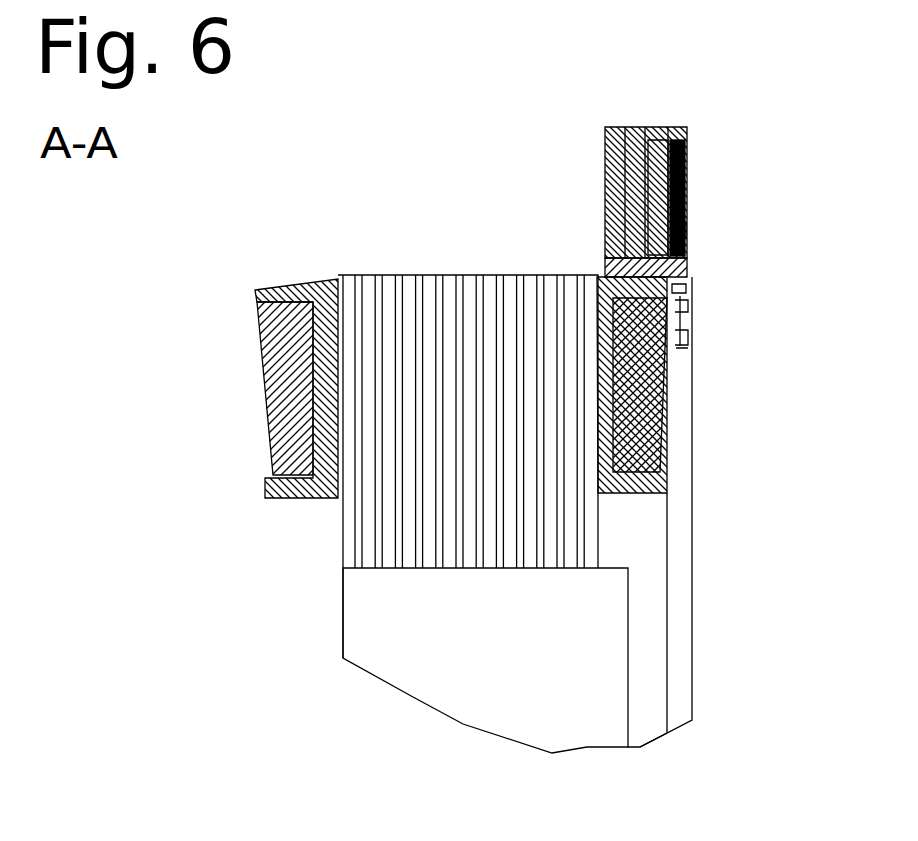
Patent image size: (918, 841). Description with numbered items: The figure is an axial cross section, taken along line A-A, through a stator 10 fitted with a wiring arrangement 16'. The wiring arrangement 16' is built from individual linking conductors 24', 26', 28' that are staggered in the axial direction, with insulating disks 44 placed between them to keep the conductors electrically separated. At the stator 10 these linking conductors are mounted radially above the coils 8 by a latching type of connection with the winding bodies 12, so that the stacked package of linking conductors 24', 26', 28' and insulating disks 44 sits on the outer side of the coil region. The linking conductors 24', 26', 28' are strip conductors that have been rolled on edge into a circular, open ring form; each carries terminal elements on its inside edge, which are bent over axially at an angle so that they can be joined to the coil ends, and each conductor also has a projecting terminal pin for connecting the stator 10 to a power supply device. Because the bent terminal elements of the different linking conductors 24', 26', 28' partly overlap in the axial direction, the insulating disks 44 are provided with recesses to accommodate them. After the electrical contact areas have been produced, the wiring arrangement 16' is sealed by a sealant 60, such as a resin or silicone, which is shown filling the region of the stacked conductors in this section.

The coils 8 is at (203, 370).
The stator 10 is at (414, 176).
The winding bodies 12 is at (310, 278).
The wiring arrangement 16' is at (680, 185).
The linking conductor 24' is at (588, 168).
The linking conductor 26' is at (681, 145).
The linking conductor 28' is at (762, 181).
The insulating disks 44 is at (624, 125).
The sealant 60 is at (687, 228).